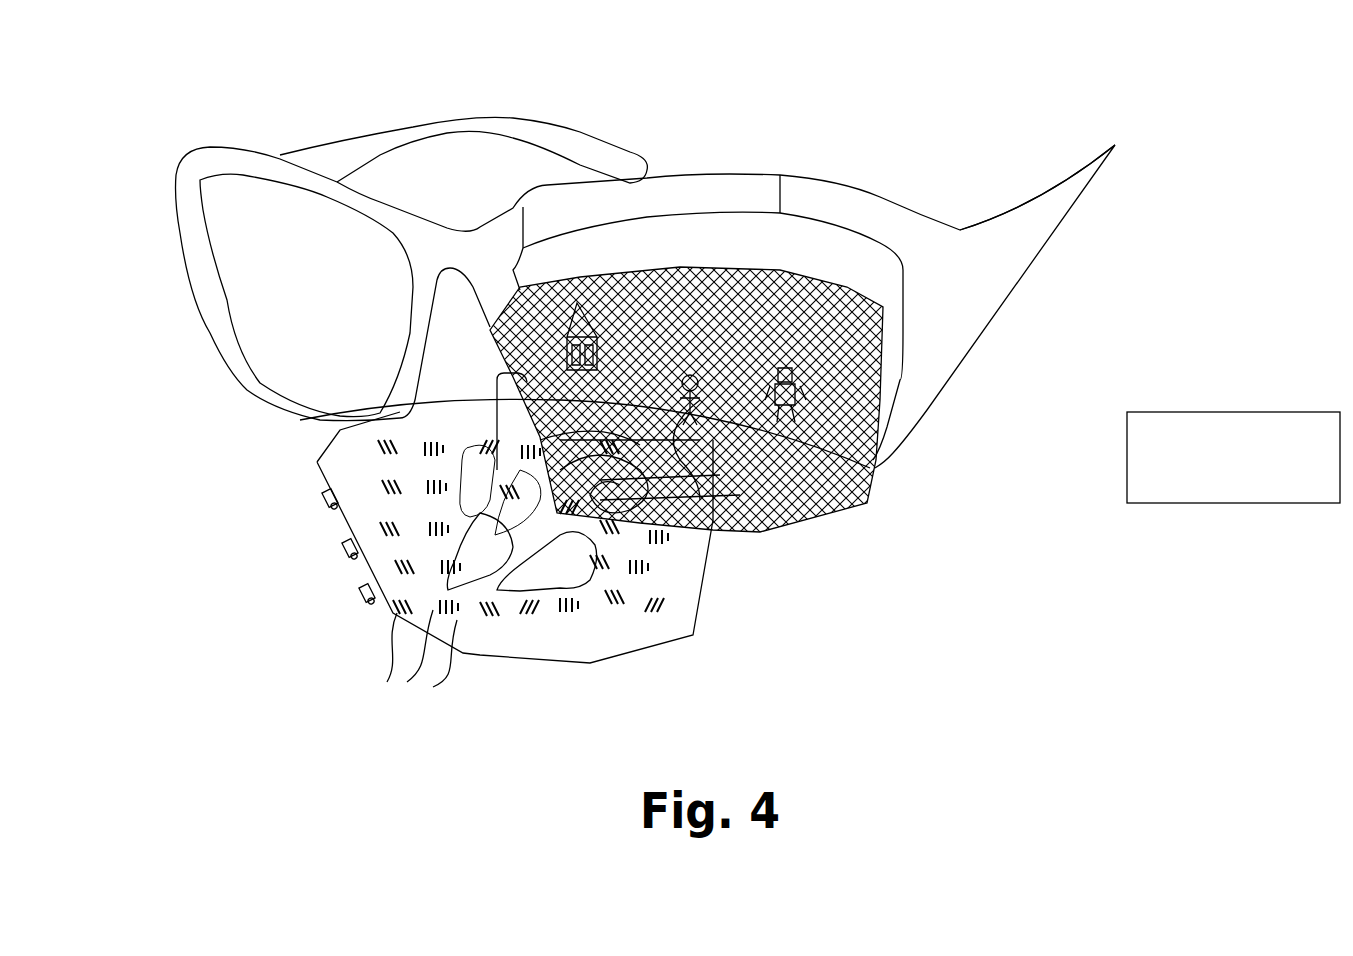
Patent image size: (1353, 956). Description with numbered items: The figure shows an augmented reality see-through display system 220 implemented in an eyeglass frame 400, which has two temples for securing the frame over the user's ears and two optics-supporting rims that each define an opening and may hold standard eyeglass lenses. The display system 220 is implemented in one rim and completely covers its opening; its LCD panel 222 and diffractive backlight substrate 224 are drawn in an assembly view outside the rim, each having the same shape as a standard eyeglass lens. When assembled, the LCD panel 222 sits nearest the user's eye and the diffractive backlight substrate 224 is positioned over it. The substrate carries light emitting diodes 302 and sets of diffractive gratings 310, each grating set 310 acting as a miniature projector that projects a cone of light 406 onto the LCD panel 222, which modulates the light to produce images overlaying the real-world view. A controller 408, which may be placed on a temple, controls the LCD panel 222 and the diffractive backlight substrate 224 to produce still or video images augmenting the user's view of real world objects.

The eyeglass frame 400 is at (292, 146).
The controller 408 is at (1213, 412).
The augmented reality see-through display system 220 is at (596, 575).
The LCD panel 222 is at (807, 520).
The diffractive backlight substrate 224 is at (693, 637).
The light emitting diode 302 is at (322, 496).
The diffractive grating set 310 is at (433, 687).
The cone of light 406 is at (498, 562).